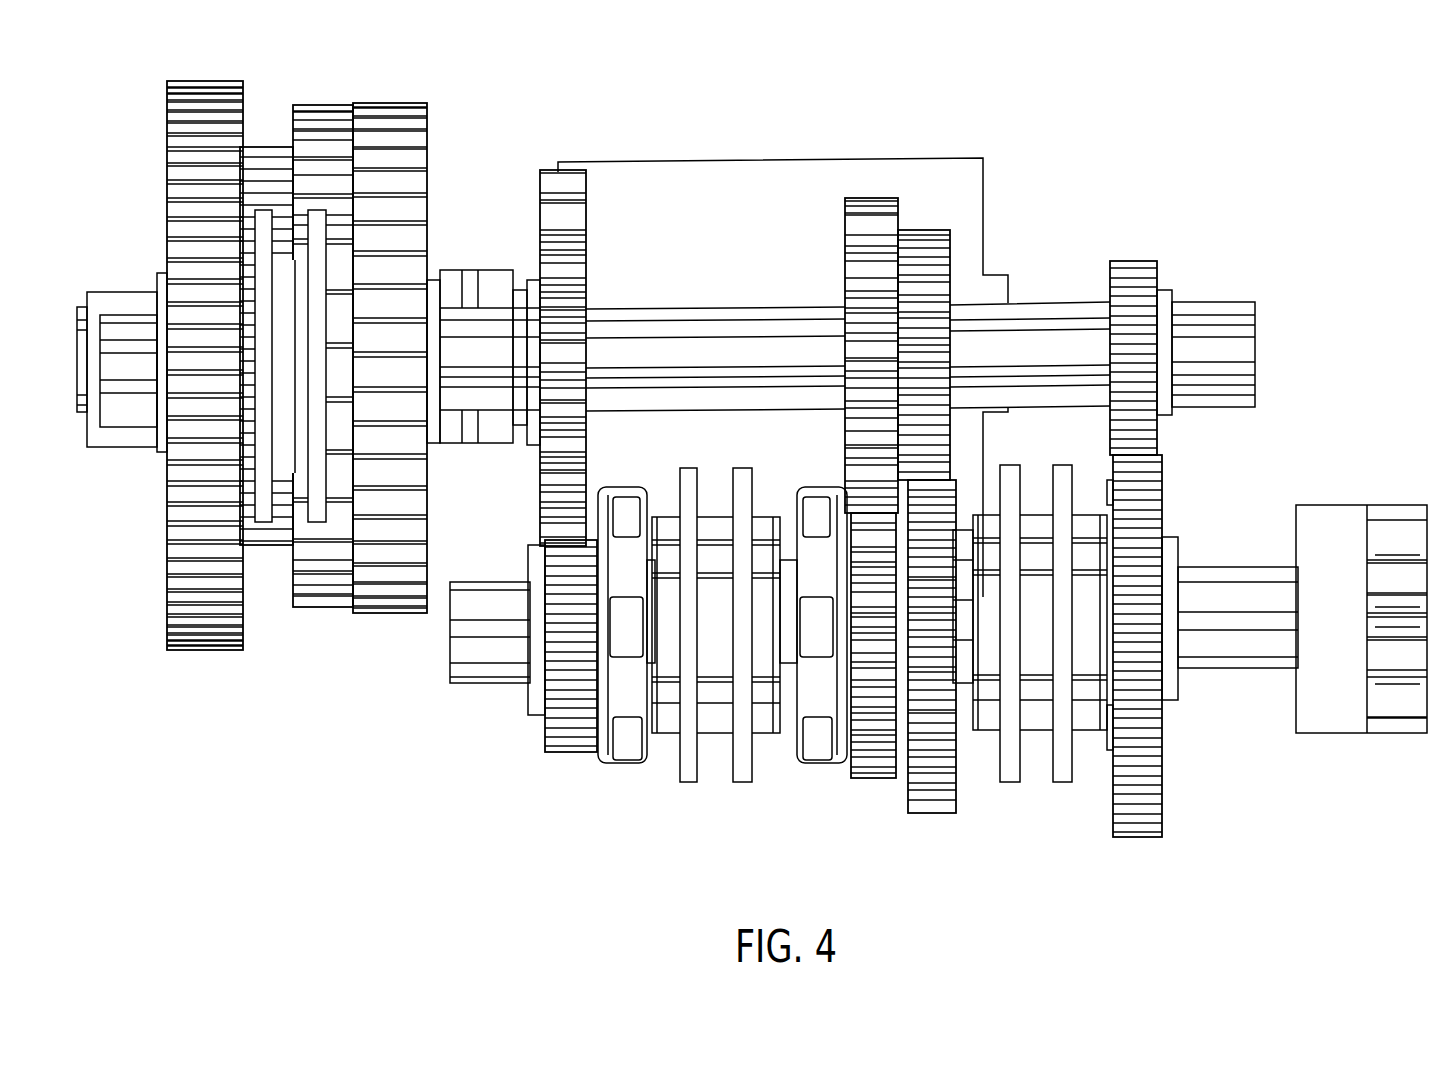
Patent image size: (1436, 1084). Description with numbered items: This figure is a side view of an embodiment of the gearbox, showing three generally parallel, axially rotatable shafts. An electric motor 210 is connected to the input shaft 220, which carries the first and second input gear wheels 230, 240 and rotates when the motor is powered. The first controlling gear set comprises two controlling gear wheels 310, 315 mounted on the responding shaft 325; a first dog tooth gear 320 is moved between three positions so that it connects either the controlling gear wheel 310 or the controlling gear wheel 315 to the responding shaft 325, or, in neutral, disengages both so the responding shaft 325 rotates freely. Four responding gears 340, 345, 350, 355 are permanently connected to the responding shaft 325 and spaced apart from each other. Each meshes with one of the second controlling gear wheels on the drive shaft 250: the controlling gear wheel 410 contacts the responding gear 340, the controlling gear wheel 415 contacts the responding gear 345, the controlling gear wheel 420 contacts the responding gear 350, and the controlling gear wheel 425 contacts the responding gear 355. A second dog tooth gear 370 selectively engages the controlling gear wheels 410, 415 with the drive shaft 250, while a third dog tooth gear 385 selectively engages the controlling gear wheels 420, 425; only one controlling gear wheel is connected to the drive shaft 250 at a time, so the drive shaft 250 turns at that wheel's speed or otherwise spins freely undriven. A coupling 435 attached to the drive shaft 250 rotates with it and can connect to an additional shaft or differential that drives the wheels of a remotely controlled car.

The electric motor 210 is at (714, 175).
The input shaft 220 is at (113, 298).
The first input gear wheel 230 is at (313, 112).
The second input gear wheel 240 is at (255, 157).
The drive shaft 250 is at (1236, 660).
The first controlling gear wheel 310 is at (213, 636).
The second controlling gear wheel 315 is at (393, 592).
The first dog tooth gear 320 is at (293, 460).
The responding shaft 325 is at (1207, 313).
The responding gear 340 is at (566, 180).
The responding gear 345 is at (875, 207).
The responding gear 350 is at (915, 235).
The responding gear 355 is at (1132, 268).
The second dog tooth gear 370 is at (727, 725).
The third dog tooth gear 385 is at (1044, 712).
The third controlling gear wheel 410 is at (573, 728).
The fourth controlling gear wheel 415 is at (878, 768).
The fifth controlling gear wheel 420 is at (938, 795).
The sixth controlling gear wheel 425 is at (1148, 828).
The coupling 435 is at (1406, 707).